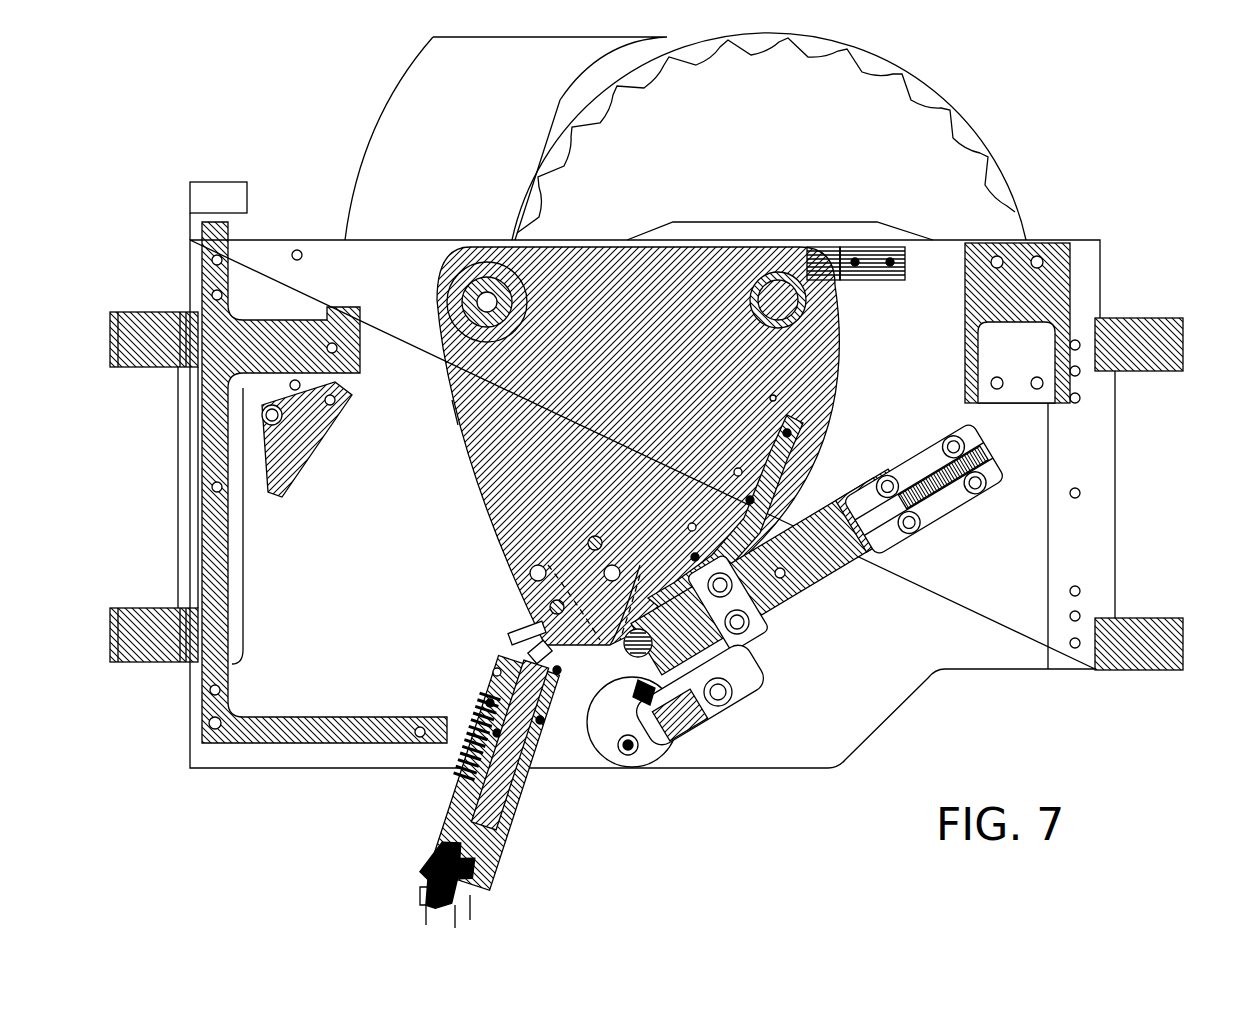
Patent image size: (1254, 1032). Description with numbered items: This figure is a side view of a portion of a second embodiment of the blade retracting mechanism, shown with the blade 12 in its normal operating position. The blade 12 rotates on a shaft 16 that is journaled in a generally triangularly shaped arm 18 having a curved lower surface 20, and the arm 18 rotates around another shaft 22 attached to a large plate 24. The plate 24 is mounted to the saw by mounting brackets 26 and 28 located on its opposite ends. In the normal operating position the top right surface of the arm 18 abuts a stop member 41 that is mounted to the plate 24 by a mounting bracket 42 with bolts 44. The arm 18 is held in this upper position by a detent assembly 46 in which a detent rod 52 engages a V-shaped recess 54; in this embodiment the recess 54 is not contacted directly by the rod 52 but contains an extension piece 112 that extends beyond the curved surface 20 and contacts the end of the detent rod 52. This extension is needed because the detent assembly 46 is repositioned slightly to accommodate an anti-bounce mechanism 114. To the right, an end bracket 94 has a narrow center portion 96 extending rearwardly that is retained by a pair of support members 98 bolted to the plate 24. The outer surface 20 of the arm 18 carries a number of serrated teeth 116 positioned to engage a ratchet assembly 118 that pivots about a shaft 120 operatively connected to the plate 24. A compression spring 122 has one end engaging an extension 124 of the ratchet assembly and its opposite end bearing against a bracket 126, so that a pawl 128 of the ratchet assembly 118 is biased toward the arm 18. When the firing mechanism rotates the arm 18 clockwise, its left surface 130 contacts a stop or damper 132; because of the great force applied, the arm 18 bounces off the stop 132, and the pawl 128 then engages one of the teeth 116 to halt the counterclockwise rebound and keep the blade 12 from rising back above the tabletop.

The blade 12 is at (893, 107).
The shaft 16 is at (800, 318).
The arm 18 is at (535, 447).
The curved lower surface 20 is at (604, 640).
The shaft 22 is at (452, 290).
The plate 24 is at (997, 638).
The mounting bracket 26 is at (1150, 345).
The mounting bracket 28 is at (147, 637).
The stop member 41 is at (819, 262).
The mounting bracket 42 is at (870, 278).
The bolts 44 is at (890, 262).
The detent assembly 46 is at (520, 835).
The detent rod 52 is at (520, 665).
The V-shaped recess 54 is at (522, 628).
The end bracket 94 is at (883, 550).
The narrow center portion 96 is at (948, 508).
The support members 98 is at (917, 468).
The extension piece 112 is at (528, 642).
The anti-bounce mechanism 114 is at (772, 664).
The serrated teeth 116 is at (760, 500).
The ratchet assembly 118 is at (600, 720).
The shaft 120 is at (727, 722).
The compression spring 122 is at (690, 740).
The extension 124 is at (648, 720).
The bracket 126 is at (690, 725).
The pawl 128 is at (548, 565).
The left surface 130 is at (455, 405).
The stop 132 is at (300, 438).